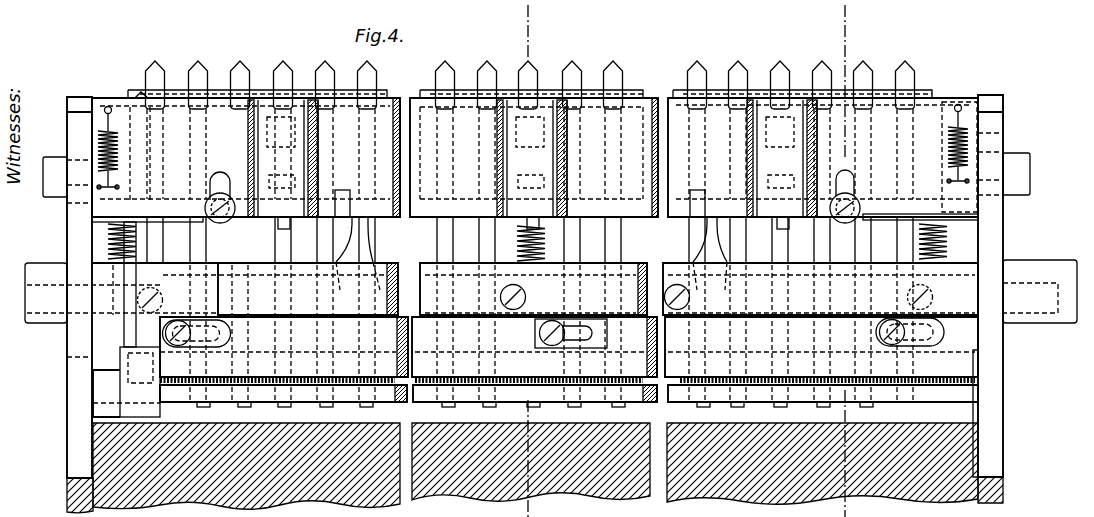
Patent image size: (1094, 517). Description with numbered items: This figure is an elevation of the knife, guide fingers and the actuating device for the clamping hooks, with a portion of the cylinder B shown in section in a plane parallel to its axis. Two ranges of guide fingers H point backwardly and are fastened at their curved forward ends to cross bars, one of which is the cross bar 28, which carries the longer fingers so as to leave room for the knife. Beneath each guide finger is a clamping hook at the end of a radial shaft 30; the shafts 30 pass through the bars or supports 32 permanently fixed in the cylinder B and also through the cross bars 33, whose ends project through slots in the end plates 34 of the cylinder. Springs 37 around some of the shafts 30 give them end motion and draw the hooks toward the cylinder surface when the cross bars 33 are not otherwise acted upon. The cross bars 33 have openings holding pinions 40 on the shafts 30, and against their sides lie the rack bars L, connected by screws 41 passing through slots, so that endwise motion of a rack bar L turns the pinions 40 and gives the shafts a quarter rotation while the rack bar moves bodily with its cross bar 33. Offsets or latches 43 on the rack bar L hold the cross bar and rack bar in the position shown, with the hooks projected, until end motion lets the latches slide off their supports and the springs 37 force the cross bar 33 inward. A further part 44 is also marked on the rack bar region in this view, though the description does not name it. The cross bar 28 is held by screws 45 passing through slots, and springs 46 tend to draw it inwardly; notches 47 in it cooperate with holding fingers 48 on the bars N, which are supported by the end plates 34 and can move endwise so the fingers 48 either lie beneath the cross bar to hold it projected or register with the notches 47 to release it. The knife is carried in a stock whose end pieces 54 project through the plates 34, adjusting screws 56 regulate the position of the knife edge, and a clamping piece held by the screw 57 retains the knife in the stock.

The cross bar 28 is at (535, 153).
The shaft 30 is at (822, 246).
The bar or support 32 is at (852, 168).
The cross bar 33 is at (535, 333).
The plate 34 is at (536, 286).
The spring 37 is at (918, 250).
The pinion 40 is at (313, 390).
The screw 41 is at (552, 319).
The offset or latch 43 is at (124, 338).
The slot 44 is at (892, 318).
The screw 45 is at (858, 192).
The spring 46 is at (947, 143).
The notch 47 is at (704, 197).
The holding finger 48 is at (706, 227).
The end piece 54 is at (536, 175).
The adjusting screw 56 is at (795, 85).
The screw 57 is at (140, 92).
The guide or finger H is at (530, 128).
The rack bar L is at (551, 306).
The cylinder B is at (535, 470).
The bar N is at (1049, 318).